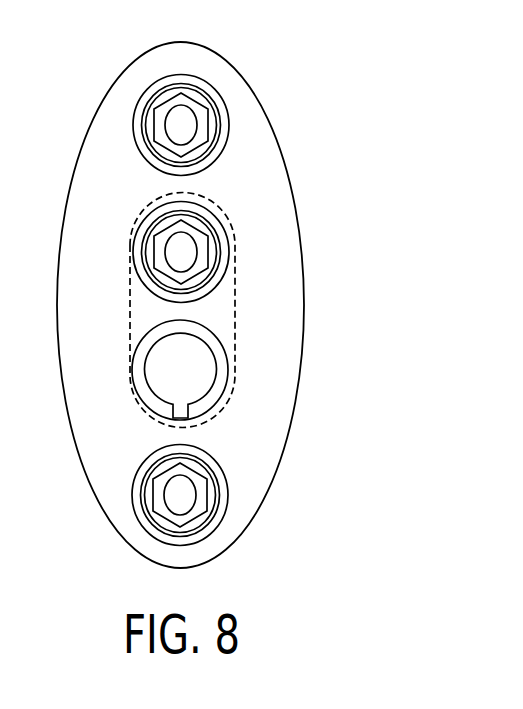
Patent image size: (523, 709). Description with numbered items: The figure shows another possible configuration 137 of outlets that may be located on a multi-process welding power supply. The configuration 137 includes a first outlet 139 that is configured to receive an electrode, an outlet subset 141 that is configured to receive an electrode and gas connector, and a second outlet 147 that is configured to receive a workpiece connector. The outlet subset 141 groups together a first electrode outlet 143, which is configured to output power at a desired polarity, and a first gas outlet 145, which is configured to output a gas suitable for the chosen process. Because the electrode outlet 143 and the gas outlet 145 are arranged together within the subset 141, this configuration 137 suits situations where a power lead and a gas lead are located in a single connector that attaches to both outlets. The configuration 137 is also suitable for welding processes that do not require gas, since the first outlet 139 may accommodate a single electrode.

The configuration 137 is at (268, 58).
The first outlet 139 is at (143, 98).
The outlet subset 141 is at (234, 297).
The first electrode outlet 143 is at (220, 208).
The first gas outlet 145 is at (223, 352).
The second outlet 147 is at (225, 503).